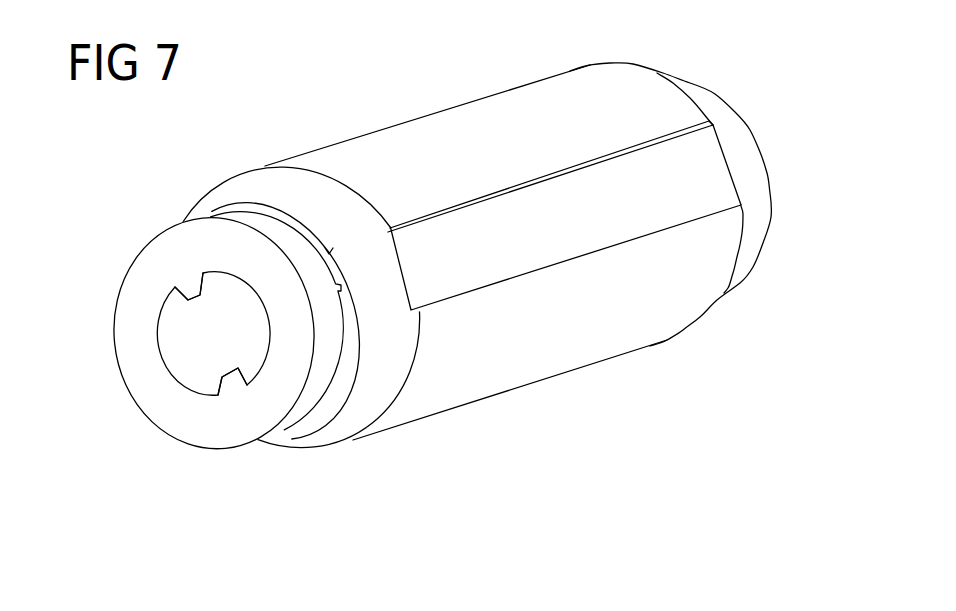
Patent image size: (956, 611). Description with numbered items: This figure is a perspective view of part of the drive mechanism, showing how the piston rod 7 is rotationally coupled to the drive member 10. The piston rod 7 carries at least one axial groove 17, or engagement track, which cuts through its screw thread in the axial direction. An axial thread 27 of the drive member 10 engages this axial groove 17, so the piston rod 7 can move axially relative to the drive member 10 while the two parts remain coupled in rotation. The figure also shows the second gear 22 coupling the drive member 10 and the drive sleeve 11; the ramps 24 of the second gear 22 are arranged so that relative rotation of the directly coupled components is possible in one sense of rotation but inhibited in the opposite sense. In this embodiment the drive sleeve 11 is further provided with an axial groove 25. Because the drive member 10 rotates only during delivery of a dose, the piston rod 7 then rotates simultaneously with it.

The piston rod 7 is at (160, 327).
The drive member 10 is at (137, 280).
The drive sleeve 11 is at (457, 122).
The axial groove 17 is at (190, 298).
The second gear 22 is at (340, 288).
The ramps 24 is at (325, 250).
The axial groove 25 is at (710, 178).
The axial thread 27 is at (193, 287).